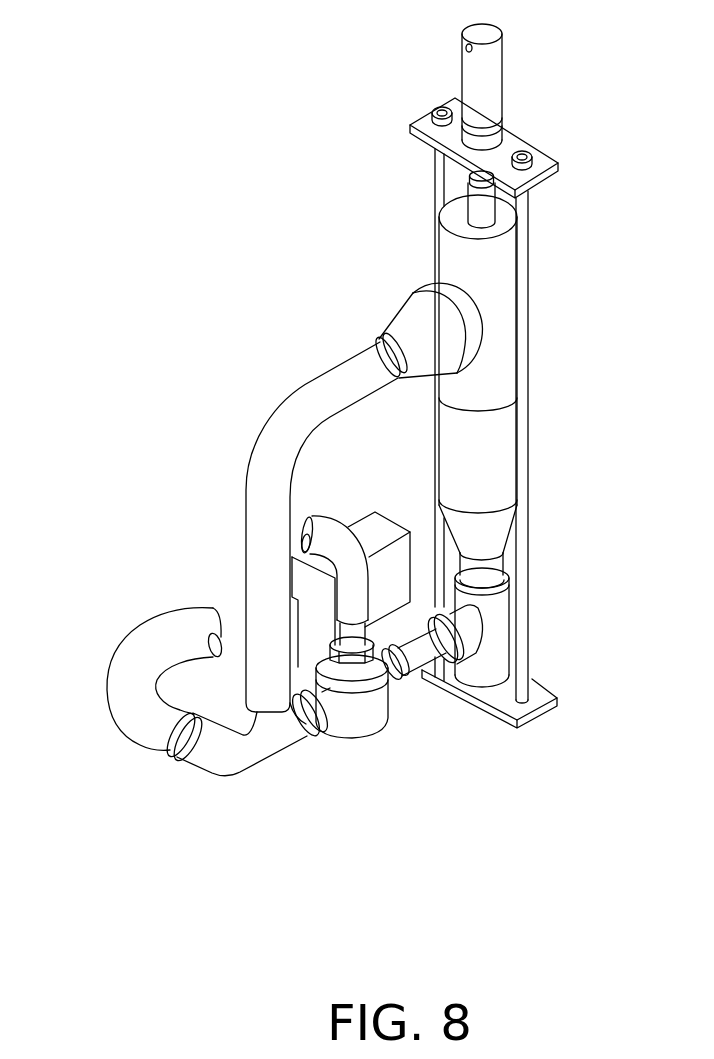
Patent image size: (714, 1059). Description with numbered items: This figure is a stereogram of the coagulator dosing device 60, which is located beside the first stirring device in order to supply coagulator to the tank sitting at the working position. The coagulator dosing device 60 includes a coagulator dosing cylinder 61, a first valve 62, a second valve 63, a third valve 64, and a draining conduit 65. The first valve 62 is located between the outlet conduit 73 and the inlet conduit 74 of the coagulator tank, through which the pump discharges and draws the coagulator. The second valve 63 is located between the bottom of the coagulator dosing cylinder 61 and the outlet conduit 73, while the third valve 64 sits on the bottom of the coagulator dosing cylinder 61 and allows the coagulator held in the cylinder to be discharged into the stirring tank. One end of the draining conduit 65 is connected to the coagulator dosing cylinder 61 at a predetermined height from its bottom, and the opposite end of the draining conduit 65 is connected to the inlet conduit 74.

The coagulator dosing device 60 is at (268, 318).
The coagulator dosing cylinder 61 is at (500, 357).
The first valve 62 is at (340, 727).
The second valve 63 is at (392, 688).
The third valve 64 is at (498, 663).
The draining conduit 65 is at (257, 472).
The outlet conduit 73 is at (332, 540).
The inlet conduit 74 is at (127, 667).